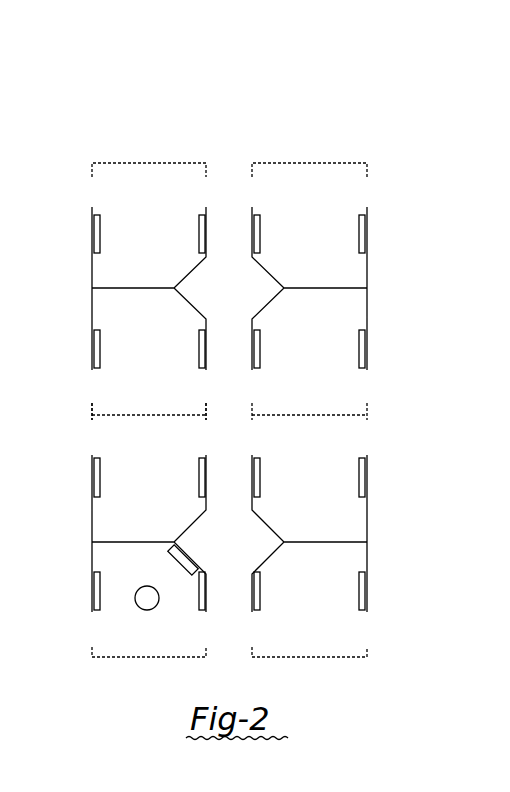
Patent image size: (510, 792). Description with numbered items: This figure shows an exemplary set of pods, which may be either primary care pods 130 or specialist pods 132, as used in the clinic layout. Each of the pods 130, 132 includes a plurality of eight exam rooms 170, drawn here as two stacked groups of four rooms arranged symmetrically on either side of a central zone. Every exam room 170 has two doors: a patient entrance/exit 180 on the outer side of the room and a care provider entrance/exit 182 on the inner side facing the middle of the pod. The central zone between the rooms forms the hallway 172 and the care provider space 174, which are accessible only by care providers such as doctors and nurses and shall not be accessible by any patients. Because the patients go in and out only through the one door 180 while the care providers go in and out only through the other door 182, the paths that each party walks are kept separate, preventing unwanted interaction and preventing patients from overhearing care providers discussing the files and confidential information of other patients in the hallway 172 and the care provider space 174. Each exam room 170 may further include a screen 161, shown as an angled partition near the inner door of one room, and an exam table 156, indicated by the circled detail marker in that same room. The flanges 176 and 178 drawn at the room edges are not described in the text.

The primary care pod 130 is at (207, 363).
The specialist pod 132 is at (207, 363).
The hallway 172 is at (225, 156).
The exam room 170 is at (158, 205).
The care provider space 174 is at (241, 297).
The first flange 176 is at (100, 237).
The second flange 178 is at (198, 240).
The patient entrance/exit 180 is at (78, 388).
The care provider entrance/exit 182 is at (213, 388).
The screen 161 is at (182, 570).
The exam table 156 is at (138, 607).